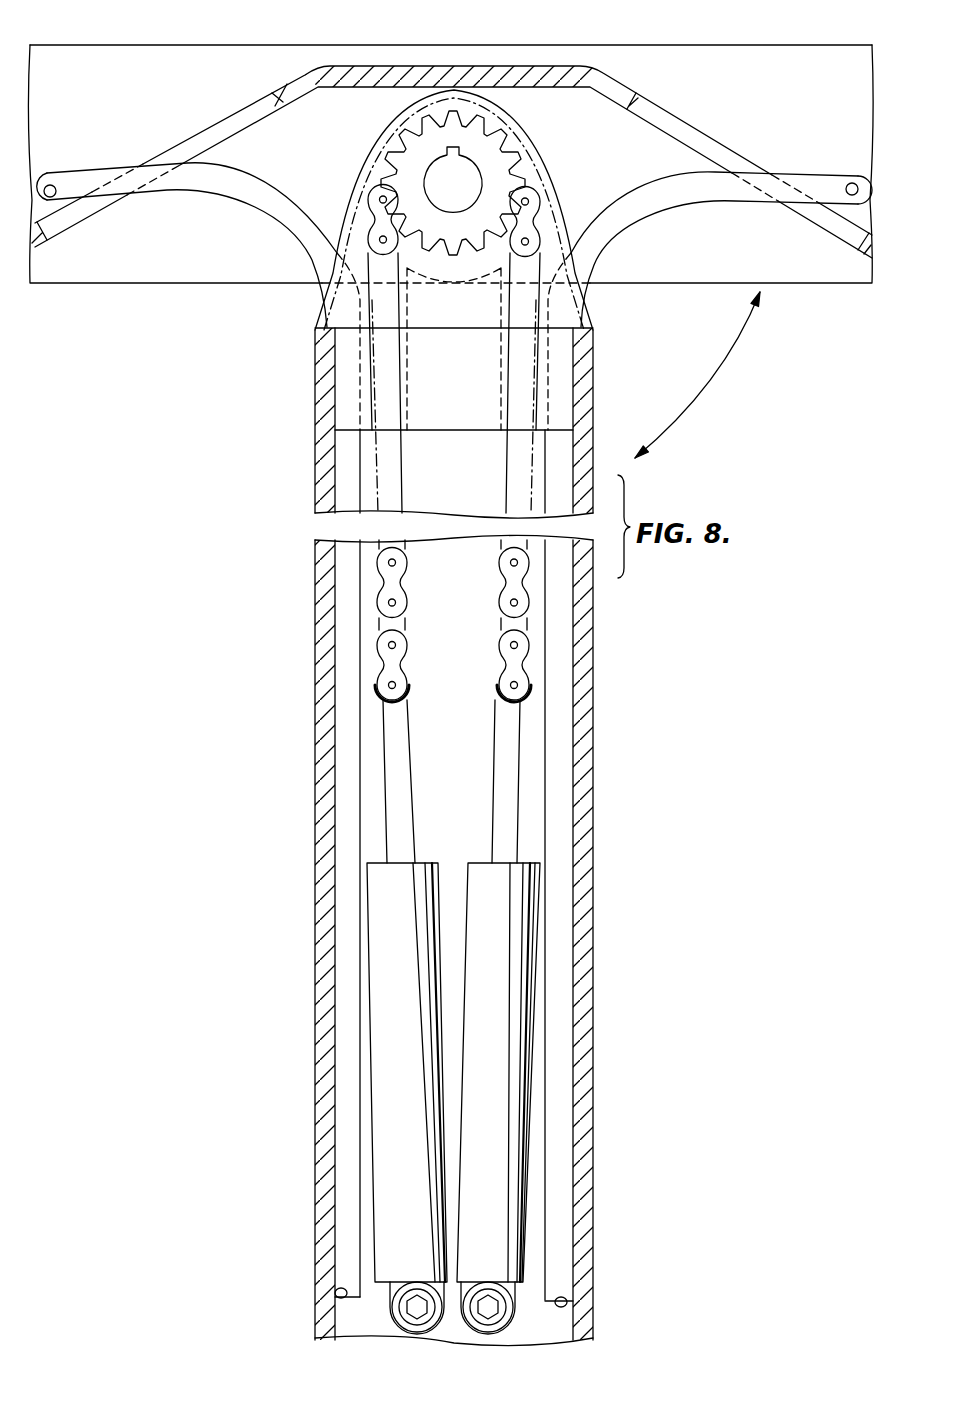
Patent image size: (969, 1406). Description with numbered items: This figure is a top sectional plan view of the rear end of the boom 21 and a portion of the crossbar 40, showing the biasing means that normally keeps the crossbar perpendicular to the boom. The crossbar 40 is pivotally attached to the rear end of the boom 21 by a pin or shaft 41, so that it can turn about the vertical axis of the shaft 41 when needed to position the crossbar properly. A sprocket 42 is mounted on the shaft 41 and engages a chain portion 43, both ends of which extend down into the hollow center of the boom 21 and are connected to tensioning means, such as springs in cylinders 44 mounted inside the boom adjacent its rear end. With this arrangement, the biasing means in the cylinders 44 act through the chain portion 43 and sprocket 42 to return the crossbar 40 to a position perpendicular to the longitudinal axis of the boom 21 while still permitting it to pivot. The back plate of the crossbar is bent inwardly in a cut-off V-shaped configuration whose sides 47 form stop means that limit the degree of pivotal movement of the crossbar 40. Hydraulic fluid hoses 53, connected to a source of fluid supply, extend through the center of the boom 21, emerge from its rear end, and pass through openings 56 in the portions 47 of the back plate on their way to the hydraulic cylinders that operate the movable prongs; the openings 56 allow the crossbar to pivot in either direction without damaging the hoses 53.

The crossbar 40 is at (645, 45).
The sides of the V-shaped configuration 47 is at (248, 106).
The openings 56 is at (277, 106).
The hydraulic fluid hoses 53 is at (240, 192).
The sprocket 42 is at (495, 145).
The shaft 41 is at (479, 183).
The chain portion 43 is at (540, 219).
The cylinders 44 is at (471, 862).
The boom 21 is at (594, 882).